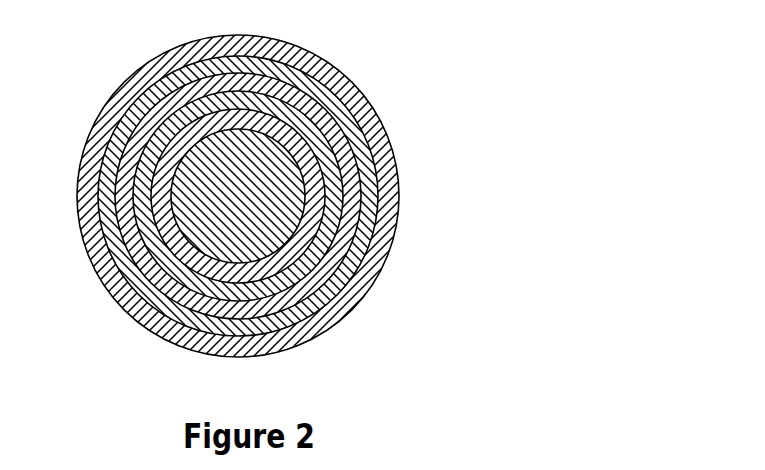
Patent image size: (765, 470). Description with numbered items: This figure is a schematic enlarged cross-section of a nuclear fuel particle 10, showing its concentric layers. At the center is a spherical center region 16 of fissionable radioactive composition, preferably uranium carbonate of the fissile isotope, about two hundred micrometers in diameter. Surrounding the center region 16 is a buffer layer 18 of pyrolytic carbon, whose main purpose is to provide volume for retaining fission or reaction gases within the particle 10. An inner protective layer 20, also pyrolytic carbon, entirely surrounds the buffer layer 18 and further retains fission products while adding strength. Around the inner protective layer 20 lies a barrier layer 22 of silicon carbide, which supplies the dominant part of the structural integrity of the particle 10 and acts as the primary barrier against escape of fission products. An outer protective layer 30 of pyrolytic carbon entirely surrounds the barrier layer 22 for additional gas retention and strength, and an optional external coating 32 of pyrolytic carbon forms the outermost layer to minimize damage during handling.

The nuclear fuel particle 10 is at (342, 75).
The center region 16 is at (303, 162).
The buffer layer 18 is at (305, 188).
The inner protective layer 20 is at (330, 214).
The barrier layer 22 is at (340, 243).
The outer protective layer 30 is at (333, 285).
The external coating 32 is at (315, 323).